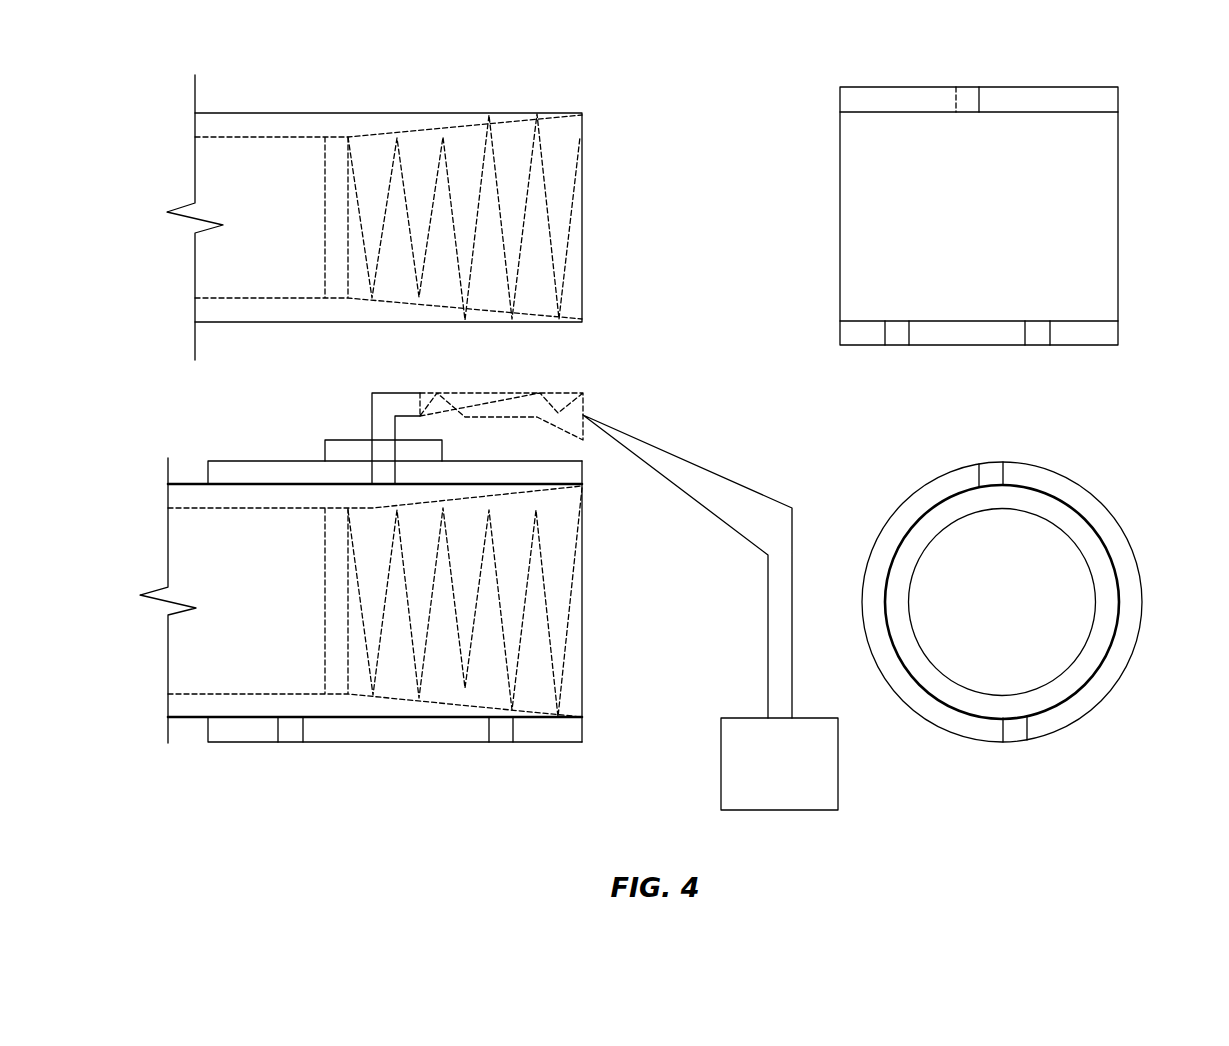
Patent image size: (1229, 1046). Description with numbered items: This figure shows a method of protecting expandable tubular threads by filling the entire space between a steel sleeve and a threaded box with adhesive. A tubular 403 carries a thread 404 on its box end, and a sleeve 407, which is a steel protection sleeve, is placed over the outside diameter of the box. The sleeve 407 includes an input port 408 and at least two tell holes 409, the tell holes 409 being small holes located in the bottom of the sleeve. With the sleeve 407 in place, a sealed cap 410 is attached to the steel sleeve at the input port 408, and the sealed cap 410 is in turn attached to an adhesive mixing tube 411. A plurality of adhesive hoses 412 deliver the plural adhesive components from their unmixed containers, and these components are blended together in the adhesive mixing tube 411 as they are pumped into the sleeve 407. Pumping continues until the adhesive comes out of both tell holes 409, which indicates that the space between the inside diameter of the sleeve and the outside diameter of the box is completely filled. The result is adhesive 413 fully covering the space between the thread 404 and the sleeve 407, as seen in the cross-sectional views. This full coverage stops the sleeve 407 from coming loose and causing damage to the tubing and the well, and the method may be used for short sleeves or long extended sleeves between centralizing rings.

The tubular 403 is at (292, 113).
The thread 404 is at (563, 232).
The sleeve 407 is at (1053, 87).
The input port 408 is at (979, 112).
The tell holes 409 is at (897, 321).
The sealed cap 410 is at (343, 440).
The adhesive mixing tube 411 is at (440, 395).
The adhesive hoses 412 is at (660, 475).
The adhesive 413 is at (1054, 489).